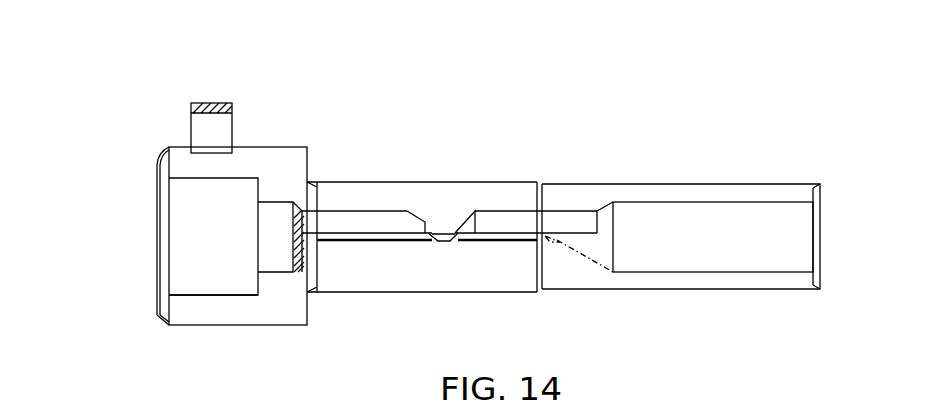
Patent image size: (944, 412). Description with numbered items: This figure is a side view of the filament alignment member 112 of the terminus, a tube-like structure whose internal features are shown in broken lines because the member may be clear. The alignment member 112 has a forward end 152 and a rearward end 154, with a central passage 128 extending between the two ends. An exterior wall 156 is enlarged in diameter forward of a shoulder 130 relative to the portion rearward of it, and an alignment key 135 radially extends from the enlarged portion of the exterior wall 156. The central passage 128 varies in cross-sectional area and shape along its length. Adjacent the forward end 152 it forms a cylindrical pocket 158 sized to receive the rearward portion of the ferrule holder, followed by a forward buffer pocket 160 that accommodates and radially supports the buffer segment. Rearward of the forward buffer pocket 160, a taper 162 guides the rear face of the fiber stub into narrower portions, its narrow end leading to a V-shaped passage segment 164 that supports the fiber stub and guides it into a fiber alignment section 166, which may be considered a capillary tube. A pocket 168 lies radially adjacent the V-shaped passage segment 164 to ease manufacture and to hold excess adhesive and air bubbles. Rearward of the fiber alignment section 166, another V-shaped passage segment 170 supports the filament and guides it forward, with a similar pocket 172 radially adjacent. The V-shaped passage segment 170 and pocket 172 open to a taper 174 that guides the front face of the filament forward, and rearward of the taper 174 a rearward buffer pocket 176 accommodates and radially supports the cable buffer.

The filament alignment member 112 is at (451, 190).
The central passage 128 is at (185, 243).
The shoulder 130 is at (307, 163).
The alignment key 135 is at (210, 118).
The forward end 152 is at (157, 167).
The rearward end 154 is at (820, 187).
The exterior wall 156 is at (642, 183).
The cylindrical pocket 158 is at (202, 287).
The forward buffer pocket 160 is at (275, 258).
The taper 162 is at (300, 258).
The V-shaped passage segment 164 is at (379, 235).
The fiber alignment section 166 is at (437, 238).
The pocket 168 is at (375, 215).
The V-shaped passage segment 170 is at (515, 241).
The pocket 172 is at (514, 225).
The taper 174 is at (595, 247).
The rearward buffer pocket 176 is at (688, 258).